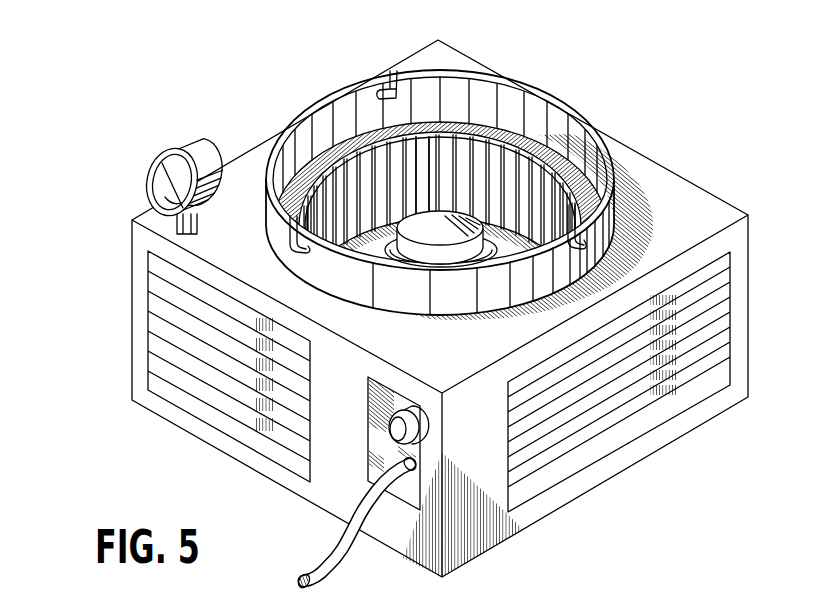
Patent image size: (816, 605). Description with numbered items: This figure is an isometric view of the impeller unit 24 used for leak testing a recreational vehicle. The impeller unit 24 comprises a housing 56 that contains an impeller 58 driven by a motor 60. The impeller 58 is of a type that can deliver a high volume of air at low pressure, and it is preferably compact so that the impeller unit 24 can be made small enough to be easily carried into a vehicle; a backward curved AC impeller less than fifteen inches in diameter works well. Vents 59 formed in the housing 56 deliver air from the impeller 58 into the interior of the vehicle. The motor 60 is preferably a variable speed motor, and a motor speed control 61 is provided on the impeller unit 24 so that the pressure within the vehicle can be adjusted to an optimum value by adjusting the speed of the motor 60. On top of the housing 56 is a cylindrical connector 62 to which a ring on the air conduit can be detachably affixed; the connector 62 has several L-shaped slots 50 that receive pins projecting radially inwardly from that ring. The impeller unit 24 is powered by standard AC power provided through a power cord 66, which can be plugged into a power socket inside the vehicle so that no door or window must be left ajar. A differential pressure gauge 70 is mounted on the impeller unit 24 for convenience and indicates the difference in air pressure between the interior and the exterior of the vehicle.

The impeller unit 24 is at (131, 213).
The L-shaped slots 50 is at (393, 72).
The housing 56 is at (480, 487).
The impeller 58 is at (497, 181).
The vents 59 is at (203, 390).
The motor 60 is at (427, 236).
The motor speed control 61 is at (404, 448).
The cylindrical connector 62 is at (488, 100).
The power cord 66 is at (331, 559).
The differential pressure gauge 70 is at (175, 140).